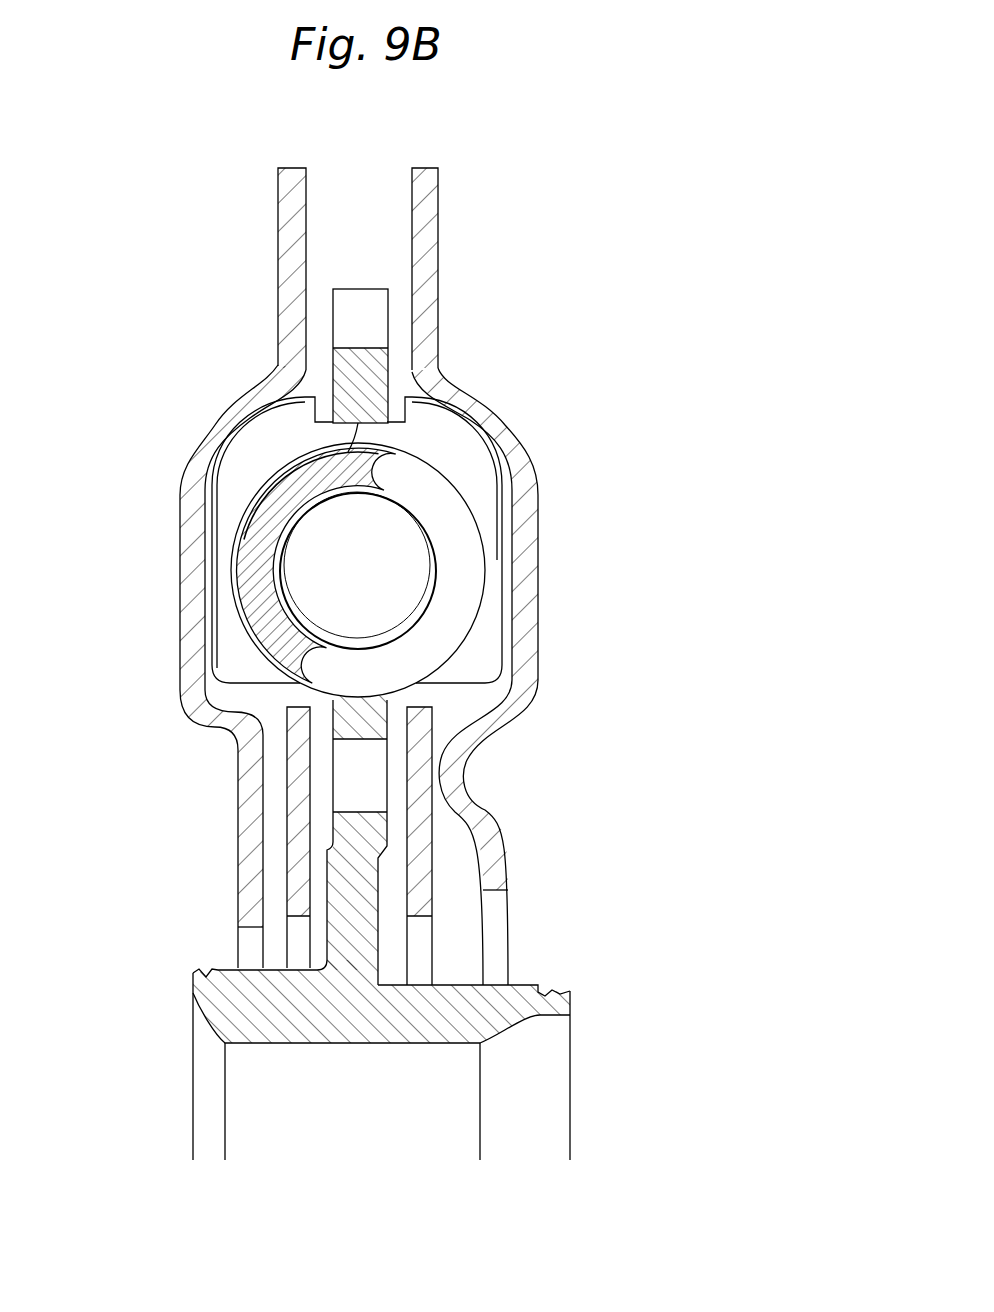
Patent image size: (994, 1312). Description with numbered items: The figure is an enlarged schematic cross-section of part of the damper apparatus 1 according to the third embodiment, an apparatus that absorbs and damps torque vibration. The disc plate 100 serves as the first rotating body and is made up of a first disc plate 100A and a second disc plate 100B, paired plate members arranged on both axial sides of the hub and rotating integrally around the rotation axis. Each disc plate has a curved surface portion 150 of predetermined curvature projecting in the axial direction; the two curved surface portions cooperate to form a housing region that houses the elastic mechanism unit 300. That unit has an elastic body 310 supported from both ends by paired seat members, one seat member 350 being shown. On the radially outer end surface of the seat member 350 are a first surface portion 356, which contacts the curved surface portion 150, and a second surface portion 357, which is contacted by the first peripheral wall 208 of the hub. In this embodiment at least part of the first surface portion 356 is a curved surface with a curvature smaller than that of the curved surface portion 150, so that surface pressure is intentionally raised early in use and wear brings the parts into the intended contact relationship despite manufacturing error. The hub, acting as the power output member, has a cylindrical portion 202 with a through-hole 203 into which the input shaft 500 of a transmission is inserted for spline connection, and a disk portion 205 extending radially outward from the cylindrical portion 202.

The damper apparatus 1 is at (590, 120).
The disc plate 100 is at (364, 269).
The first disc plate 100A is at (283, 212).
The second disc plate 100B is at (445, 212).
The curved surface portion 150 is at (463, 392).
The cylindrical portion 202 is at (515, 1008).
The through-hole 203 is at (553, 1043).
The disk portion 205 is at (360, 935).
The first peripheral wall 208 is at (317, 472).
The elastic mechanism unit 300 is at (256, 665).
The elastic body 310 is at (463, 576).
The seat member 350 is at (248, 476).
The first surface portion 356 is at (465, 443).
The second surface portion 357 is at (317, 418).
The input shaft 500 is at (503, 1090).